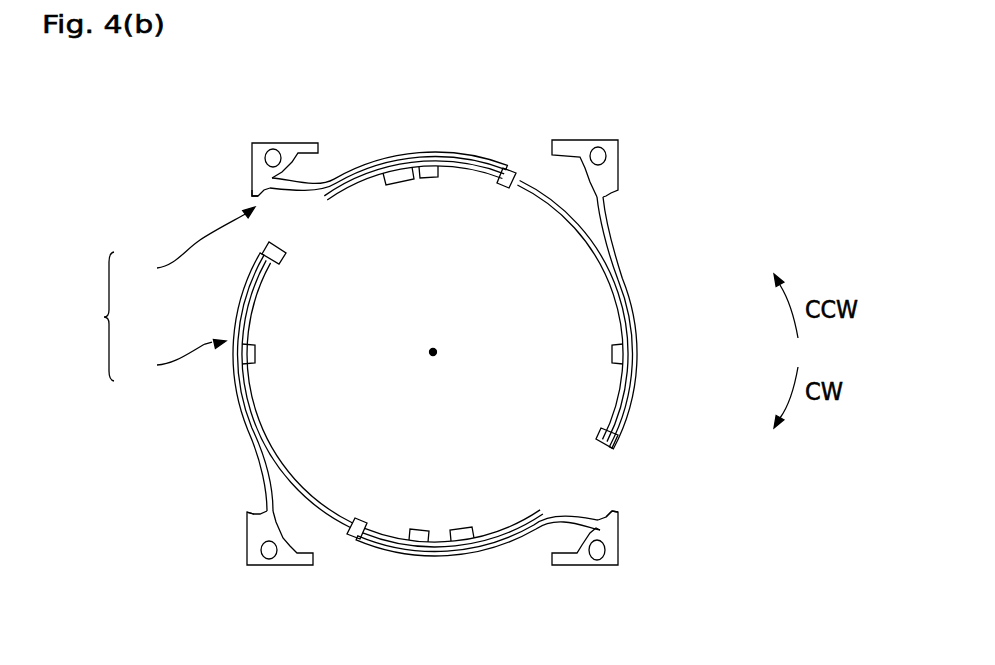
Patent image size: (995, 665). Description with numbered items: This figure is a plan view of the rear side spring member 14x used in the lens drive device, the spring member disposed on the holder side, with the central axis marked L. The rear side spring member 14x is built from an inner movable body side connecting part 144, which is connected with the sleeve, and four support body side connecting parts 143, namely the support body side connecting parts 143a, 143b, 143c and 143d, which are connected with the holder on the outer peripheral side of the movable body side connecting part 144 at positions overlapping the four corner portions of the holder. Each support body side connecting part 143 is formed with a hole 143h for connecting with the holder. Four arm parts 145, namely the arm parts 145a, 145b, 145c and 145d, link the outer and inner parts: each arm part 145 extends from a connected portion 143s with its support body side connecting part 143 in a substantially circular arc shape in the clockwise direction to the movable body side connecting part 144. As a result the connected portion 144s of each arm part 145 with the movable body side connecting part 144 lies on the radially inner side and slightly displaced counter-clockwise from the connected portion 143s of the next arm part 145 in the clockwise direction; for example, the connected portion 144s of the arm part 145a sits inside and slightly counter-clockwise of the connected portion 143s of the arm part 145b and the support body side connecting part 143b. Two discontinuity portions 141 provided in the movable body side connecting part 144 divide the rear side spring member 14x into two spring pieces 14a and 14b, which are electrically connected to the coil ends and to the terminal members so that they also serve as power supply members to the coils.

The support body side connecting part 143 is at (440, 356).
The support body side connecting part 143a is at (588, 138).
The support body side connecting part 143b is at (620, 530).
The support body side connecting part 143c is at (247, 547).
The support body side connecting part 143d is at (257, 141).
The hole 143h is at (280, 141).
The connected portion 143s is at (251, 192).
The movable body side connecting part 144 is at (590, 276).
The connected portion 144s is at (505, 190).
The arm part 145 is at (430, 363).
The arm part 145a is at (632, 330).
The arm part 145b is at (445, 560).
The arm part 145c is at (240, 431).
The arm part 145d is at (435, 148).
The discontinuity portion 141 is at (305, 233).
The rear side spring member 14x is at (161, 294).
The spring piece 14a is at (170, 358).
The spring piece 14b is at (185, 245).
The optical axis L is at (437, 354).